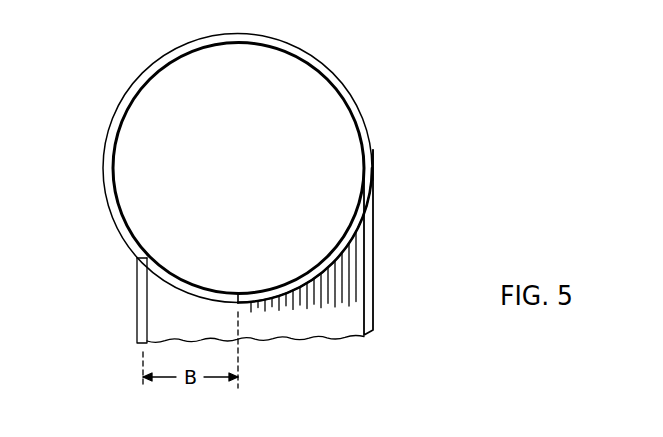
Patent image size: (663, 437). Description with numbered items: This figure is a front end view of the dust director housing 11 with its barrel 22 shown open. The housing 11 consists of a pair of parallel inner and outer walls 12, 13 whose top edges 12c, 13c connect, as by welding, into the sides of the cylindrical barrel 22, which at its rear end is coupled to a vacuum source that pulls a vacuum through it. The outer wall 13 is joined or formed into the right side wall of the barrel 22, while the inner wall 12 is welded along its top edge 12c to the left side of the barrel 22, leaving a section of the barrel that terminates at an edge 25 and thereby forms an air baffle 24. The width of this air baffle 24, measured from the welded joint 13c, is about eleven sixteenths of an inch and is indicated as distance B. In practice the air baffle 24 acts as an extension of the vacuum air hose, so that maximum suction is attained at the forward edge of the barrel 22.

The housing 11 is at (408, 249).
The inner wall 12 is at (375, 286).
The top edge of inner wall 12c is at (372, 161).
The outer wall 13 is at (137, 307).
The top edge of outer wall 13c is at (136, 260).
The barrel 22 is at (322, 70).
The air baffle 24 is at (188, 281).
The edge 25 is at (243, 297).